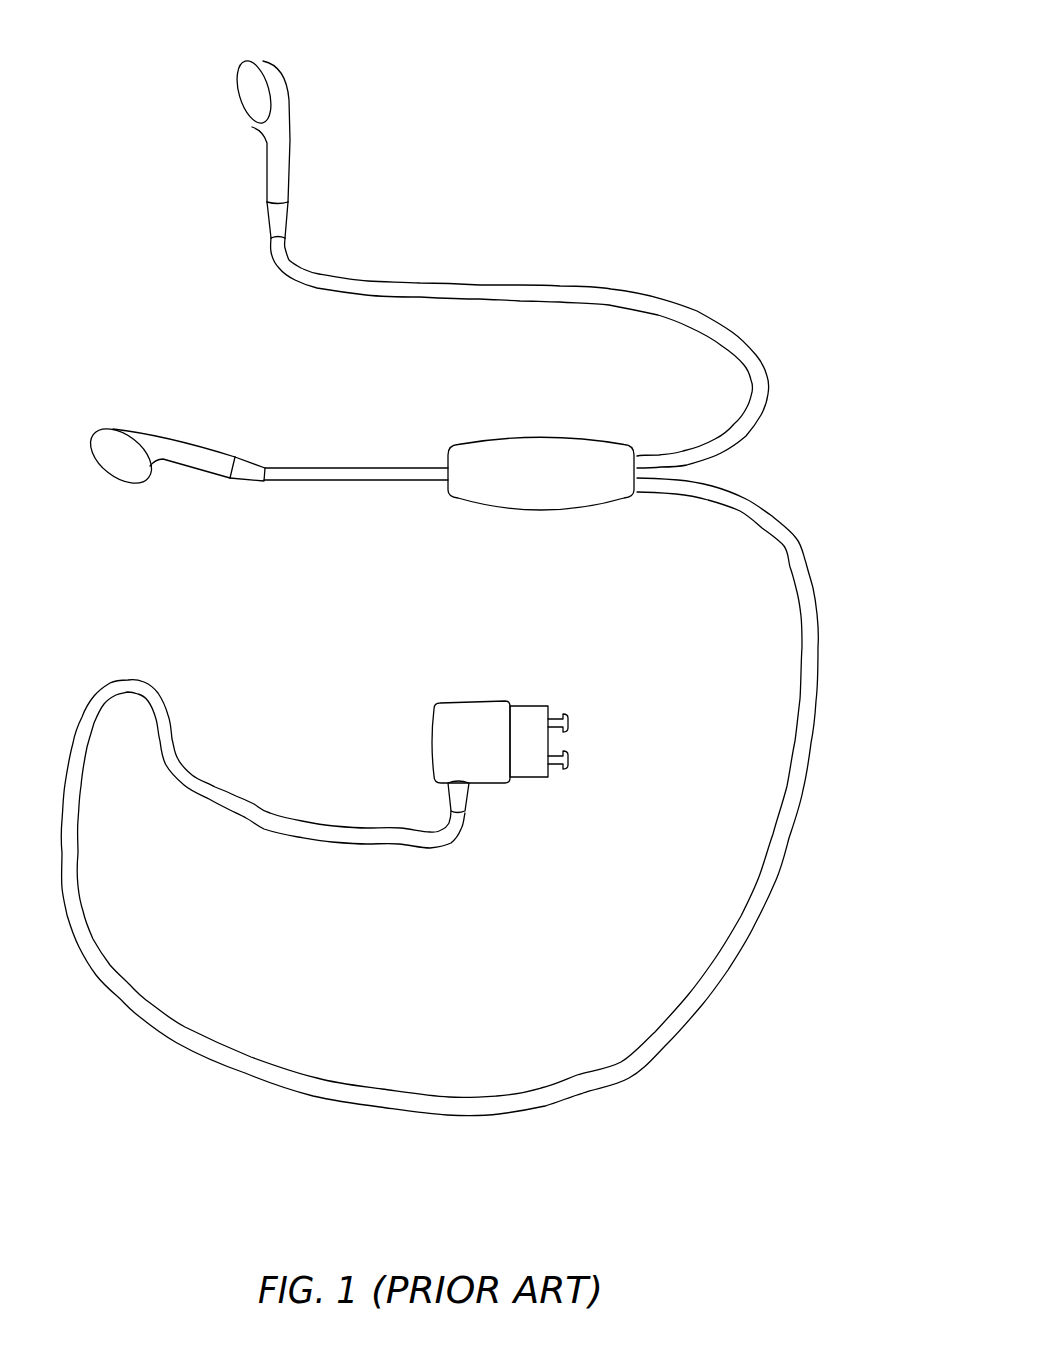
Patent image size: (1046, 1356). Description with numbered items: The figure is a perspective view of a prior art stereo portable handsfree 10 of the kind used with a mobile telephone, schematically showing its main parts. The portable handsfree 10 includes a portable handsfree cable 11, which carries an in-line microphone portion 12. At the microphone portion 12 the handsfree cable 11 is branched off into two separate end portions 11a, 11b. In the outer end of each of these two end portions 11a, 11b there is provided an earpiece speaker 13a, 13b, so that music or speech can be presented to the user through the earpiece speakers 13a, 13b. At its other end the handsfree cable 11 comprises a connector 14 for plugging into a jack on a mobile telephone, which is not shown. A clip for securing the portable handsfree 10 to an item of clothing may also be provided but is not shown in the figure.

The portable handsfree 10 is at (547, 100).
The portable handsfree cable 11 is at (780, 845).
The end portion 11a is at (388, 468).
The end portion 11b is at (493, 283).
The in-line microphone portion 12 is at (552, 455).
The earpiece speaker 13a is at (120, 428).
The earpiece speaker 13b is at (292, 115).
The connector 14 is at (493, 698).